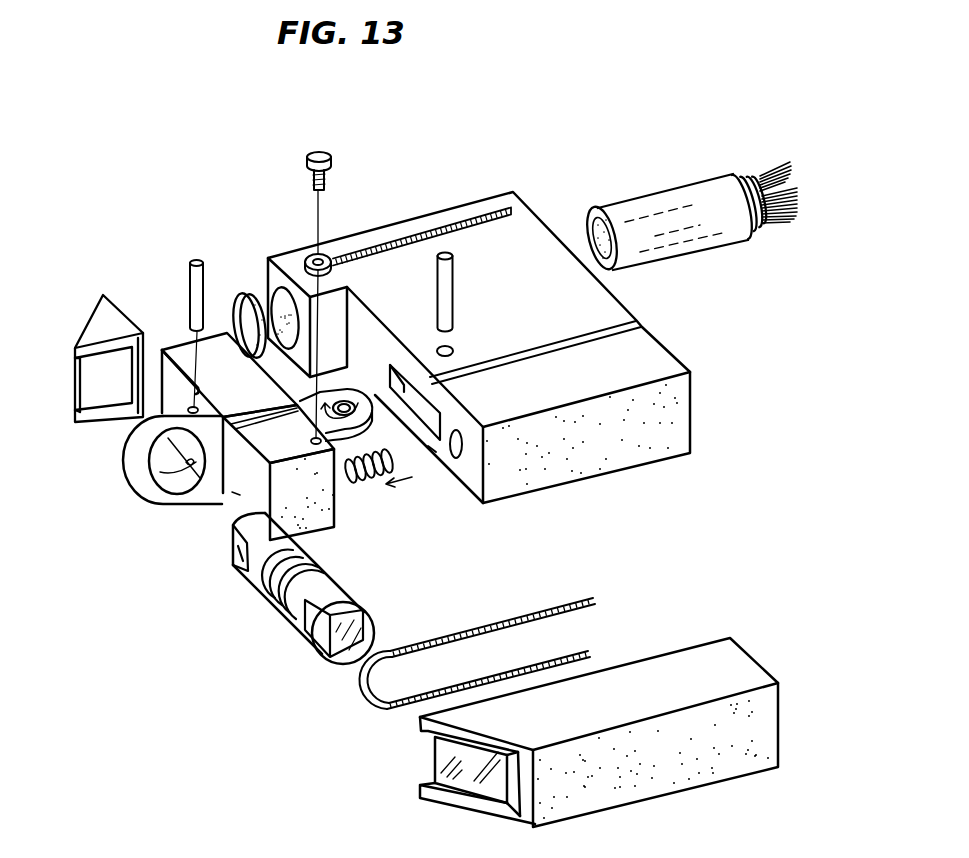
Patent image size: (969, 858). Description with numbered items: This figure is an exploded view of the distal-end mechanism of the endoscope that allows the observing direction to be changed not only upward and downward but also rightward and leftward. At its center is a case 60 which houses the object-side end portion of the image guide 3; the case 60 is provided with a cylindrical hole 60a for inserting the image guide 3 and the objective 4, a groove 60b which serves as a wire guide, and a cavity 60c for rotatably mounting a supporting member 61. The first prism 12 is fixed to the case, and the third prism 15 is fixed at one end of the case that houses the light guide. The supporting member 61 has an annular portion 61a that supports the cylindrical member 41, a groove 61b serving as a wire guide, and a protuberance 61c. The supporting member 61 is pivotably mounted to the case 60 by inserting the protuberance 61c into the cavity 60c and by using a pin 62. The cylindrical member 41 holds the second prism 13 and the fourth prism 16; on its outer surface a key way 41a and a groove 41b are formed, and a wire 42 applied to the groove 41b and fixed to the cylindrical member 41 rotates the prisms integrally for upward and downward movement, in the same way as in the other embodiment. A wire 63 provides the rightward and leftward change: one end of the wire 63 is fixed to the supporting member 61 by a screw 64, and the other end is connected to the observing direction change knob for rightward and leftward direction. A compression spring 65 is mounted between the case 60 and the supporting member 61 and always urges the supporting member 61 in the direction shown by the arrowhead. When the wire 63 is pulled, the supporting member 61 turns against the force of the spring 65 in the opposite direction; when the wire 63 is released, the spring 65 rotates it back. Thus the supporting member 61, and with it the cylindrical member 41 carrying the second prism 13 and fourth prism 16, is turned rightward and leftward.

The image guide 3 is at (592, 232).
The objective 4 is at (237, 310).
The first prism 12 is at (110, 367).
The second prism 13 is at (238, 560).
The third prism 15 is at (440, 752).
The fourth prism 16 is at (318, 653).
The cylindrical member 41 is at (254, 611).
The key way 41a is at (301, 552).
The groove 41b is at (309, 565).
The wire 42 is at (457, 636).
The case 60 is at (443, 194).
The cylindrical hole 60a is at (262, 297).
The groove 60b is at (555, 349).
The cavity 60c is at (391, 380).
The supporting member 61 is at (169, 402).
The annular portion 61a is at (130, 470).
The groove 61b is at (233, 437).
The protuberance 61c is at (371, 413).
The pin 62 is at (453, 284).
The wire 63 is at (377, 240).
The screw 64 is at (309, 152).
The compression spring 65 is at (371, 478).